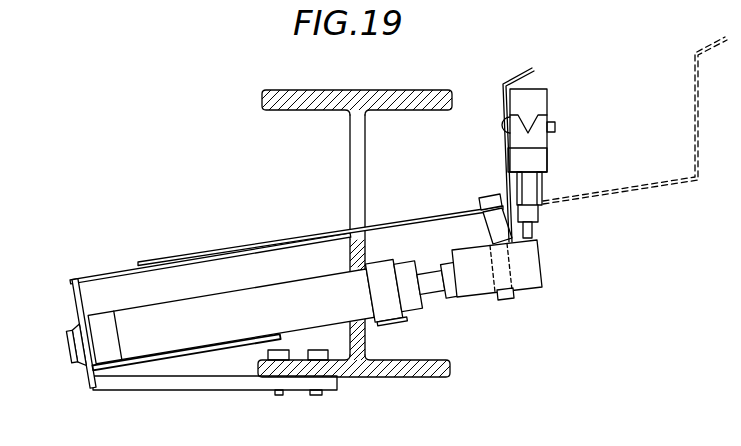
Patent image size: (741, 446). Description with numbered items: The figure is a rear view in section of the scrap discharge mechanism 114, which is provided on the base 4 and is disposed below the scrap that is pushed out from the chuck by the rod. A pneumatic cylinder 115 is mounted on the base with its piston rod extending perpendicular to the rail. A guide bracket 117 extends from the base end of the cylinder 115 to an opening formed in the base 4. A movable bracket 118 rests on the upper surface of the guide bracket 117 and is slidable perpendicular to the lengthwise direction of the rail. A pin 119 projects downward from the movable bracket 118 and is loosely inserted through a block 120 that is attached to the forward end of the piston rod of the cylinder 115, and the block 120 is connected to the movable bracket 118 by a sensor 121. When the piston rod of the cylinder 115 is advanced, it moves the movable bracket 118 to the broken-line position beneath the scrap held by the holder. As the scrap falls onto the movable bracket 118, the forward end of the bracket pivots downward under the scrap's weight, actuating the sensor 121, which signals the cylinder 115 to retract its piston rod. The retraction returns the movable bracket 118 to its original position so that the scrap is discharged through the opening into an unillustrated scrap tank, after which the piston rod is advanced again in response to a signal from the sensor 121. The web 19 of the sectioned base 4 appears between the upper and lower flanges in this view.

The base 4 is at (360, 98).
The beam web 19 is at (356, 126).
The scrap discharge mechanism 114 is at (475, 300).
The pneumatic cylinder 115 is at (210, 312).
The guide bracket 117 is at (122, 272).
The movable bracket 118 is at (410, 222).
The pin 119 is at (490, 232).
The block 120 is at (530, 257).
The sensor 121 is at (534, 163).